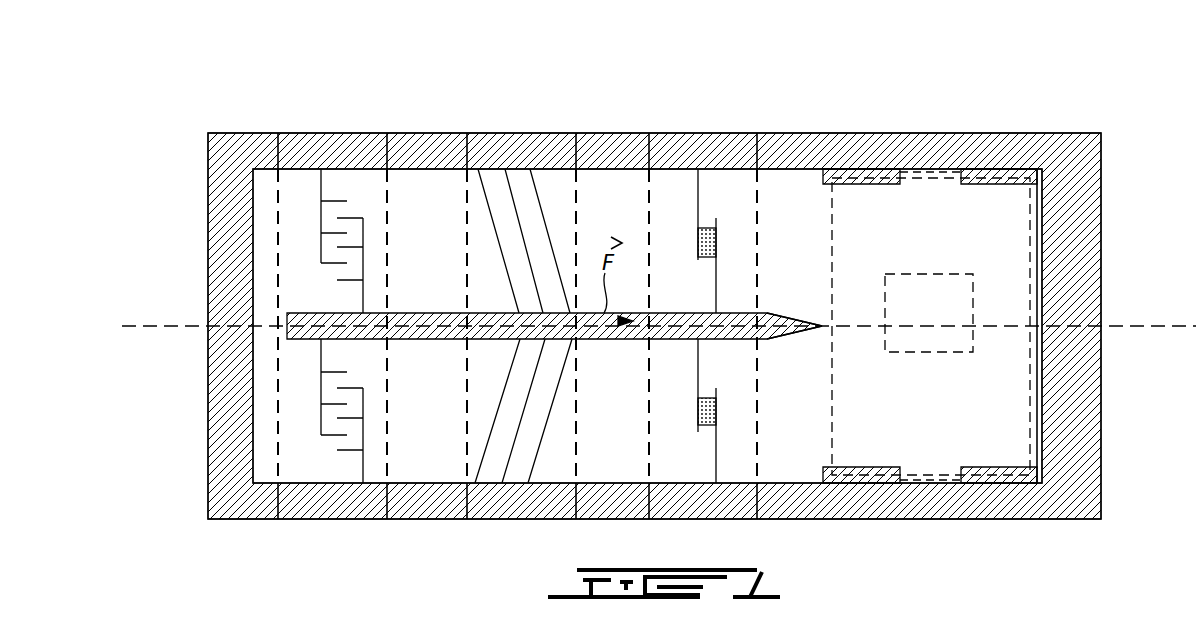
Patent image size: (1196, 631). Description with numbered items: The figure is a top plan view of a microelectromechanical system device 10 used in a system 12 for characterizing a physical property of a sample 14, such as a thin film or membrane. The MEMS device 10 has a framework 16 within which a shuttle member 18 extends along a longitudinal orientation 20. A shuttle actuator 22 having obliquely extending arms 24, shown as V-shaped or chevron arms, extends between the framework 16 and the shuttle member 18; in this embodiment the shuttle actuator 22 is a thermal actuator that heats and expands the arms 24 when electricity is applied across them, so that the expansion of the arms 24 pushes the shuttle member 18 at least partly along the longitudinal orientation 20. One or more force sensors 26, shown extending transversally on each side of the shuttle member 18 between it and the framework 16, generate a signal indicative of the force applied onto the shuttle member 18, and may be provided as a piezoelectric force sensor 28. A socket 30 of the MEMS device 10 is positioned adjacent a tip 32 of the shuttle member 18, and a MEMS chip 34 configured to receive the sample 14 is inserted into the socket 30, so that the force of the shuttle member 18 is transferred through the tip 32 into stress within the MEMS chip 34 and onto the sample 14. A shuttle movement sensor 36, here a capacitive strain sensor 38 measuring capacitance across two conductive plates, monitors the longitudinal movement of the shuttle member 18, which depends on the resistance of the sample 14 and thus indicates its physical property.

The MEMS device 10 is at (921, 129).
The system 12 is at (1091, 94).
The sample 14 is at (975, 313).
The framework 16 is at (219, 152).
The shuttle member 18 is at (415, 313).
The longitudinal orientation 20 is at (160, 326).
The shuttle actuator 22 is at (558, 259).
The arms 24 is at (538, 197).
The force sensor 26 is at (742, 128).
The piezoelectric force sensor 28 is at (699, 208).
The socket 30 is at (1049, 213).
The tip 32 is at (806, 340).
The MEMS chip 34 is at (1049, 415).
The shuttle movement sensor 36 is at (345, 128).
The capacitive strain sensor 38 is at (351, 208).